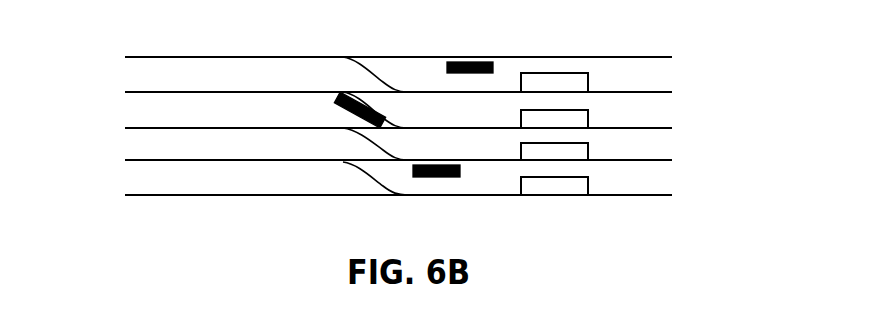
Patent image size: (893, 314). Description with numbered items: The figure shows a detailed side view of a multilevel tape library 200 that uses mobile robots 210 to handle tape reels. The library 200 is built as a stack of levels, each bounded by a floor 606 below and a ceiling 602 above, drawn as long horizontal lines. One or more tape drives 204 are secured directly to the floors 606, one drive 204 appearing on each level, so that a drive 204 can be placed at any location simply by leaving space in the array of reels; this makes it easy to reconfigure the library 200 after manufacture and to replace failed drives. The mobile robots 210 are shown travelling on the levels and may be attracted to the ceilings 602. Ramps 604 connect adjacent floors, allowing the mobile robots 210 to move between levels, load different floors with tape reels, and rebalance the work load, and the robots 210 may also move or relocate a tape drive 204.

The tape library 200 is at (705, 140).
The tape drive 204 is at (571, 78).
The mobile robot 210 is at (465, 60).
The ceiling 602 is at (138, 63).
The ramp 604 is at (342, 72).
The floor 606 is at (133, 193).